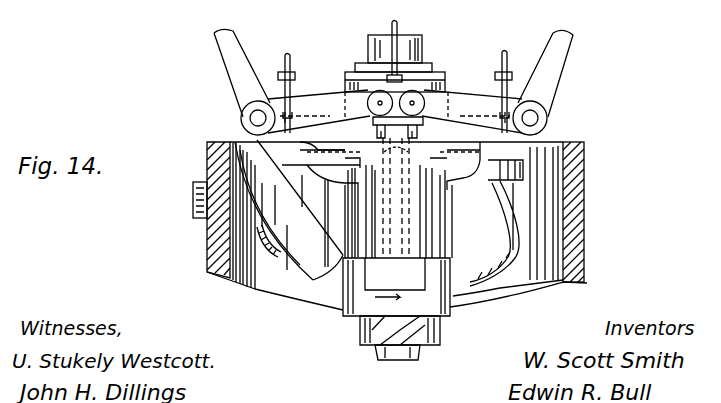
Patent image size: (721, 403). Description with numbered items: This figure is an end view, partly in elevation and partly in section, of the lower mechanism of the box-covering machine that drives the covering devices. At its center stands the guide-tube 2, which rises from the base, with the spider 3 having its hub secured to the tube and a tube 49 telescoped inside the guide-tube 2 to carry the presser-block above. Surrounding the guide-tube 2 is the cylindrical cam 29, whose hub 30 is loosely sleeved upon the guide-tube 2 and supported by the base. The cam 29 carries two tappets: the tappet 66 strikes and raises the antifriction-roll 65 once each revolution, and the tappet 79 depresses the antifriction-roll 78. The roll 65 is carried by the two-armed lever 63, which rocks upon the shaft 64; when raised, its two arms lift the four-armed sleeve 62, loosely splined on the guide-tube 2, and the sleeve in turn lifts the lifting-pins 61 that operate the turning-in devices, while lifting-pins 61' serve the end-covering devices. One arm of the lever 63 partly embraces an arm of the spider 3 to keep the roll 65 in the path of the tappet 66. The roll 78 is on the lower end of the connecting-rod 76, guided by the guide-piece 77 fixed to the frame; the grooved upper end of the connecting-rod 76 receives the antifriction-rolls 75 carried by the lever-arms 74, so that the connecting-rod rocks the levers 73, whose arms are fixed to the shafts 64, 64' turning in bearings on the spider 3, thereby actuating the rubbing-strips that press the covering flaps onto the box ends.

The guide-tube 2 is at (375, 345).
The spider 3 is at (440, 77).
The cam 29 is at (585, 205).
The hub 30 is at (350, 318).
The tube 49 is at (410, 362).
The lifting-pins 61 is at (408, 88).
The lifting-pins 61' is at (413, 46).
The four-armed sleeve 62 is at (355, 211).
The two-armed lever 63 is at (293, 153).
The shaft 64 is at (236, 118).
The shaft 64' is at (553, 118).
The antifriction-roll 65 is at (433, 162).
The tappet 66 is at (520, 170).
The levers 73 is at (238, 34).
The lever-arms 74 is at (395, 111).
The antifriction-rolls 75 is at (368, 101).
The connecting-rod 76 is at (350, 148).
The guide-piece 77 is at (430, 240).
The antifriction-roll 78 is at (420, 201).
The tappet 79 is at (193, 207).